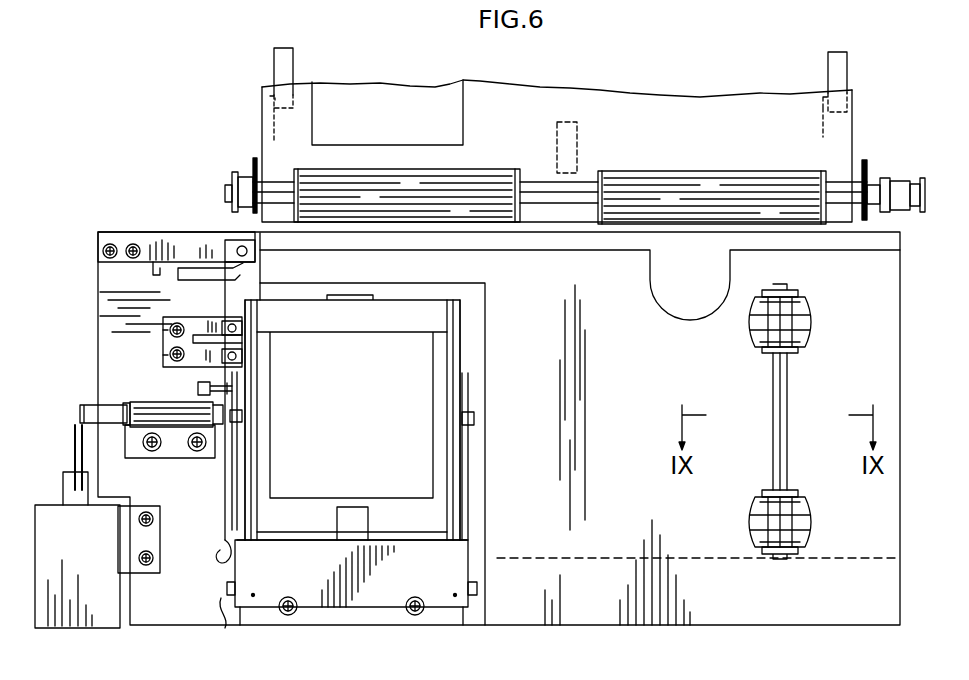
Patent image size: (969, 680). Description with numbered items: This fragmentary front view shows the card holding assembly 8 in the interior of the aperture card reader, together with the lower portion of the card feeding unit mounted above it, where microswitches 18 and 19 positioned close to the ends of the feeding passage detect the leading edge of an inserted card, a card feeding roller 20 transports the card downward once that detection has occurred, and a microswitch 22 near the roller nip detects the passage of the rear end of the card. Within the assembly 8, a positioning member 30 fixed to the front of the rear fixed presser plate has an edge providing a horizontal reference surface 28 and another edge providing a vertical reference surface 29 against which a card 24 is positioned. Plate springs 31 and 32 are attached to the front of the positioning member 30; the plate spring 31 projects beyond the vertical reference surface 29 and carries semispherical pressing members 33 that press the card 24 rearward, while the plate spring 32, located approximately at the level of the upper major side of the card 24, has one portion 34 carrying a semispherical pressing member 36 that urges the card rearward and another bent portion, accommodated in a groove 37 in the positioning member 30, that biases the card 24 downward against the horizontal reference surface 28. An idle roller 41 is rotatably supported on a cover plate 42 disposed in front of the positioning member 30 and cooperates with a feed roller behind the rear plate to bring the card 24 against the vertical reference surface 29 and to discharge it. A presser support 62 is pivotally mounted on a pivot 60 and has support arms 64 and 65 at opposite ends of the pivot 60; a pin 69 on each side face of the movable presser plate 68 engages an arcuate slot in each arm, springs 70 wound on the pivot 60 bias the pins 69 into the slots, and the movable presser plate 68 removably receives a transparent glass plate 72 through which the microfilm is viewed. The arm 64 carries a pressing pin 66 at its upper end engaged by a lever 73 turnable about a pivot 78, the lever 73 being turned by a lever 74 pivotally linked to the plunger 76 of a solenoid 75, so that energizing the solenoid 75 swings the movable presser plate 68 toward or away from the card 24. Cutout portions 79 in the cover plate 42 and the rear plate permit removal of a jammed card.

The card holding assembly 8 is at (90, 341).
The microswitch 18 is at (288, 62).
The microswitch 19 is at (830, 60).
The card feeding roller 20 is at (491, 188).
The microswitch 22 is at (578, 135).
The card 24 is at (688, 141).
The horizontal reference surface 28 is at (480, 552).
The vertical reference surface 29 is at (225, 534).
The positioning member 30 is at (178, 596).
The plate spring 31 is at (163, 357).
The plate spring 32 is at (120, 263).
The semispherical pressing member 33 is at (220, 322).
The portion 34 is at (232, 246).
The semispherical pressing member 36 is at (214, 248).
The groove 37 is at (172, 279).
The idle roller 41 is at (800, 520).
The cover plate 42 is at (600, 468).
The pivot 60 is at (225, 628).
The presser support 62 is at (368, 598).
The support arm 64 is at (230, 450).
The support arm 65 is at (468, 476).
The pressing pin 66 is at (198, 388).
The movable presser plate 68 is at (300, 324).
The pin 69 is at (232, 432).
The spring 70 is at (258, 453).
The transparent glass plate 72 is at (340, 437).
The lever 73 is at (178, 440).
The lever 74 is at (104, 408).
The solenoid 75 is at (68, 563).
The plunger 76 is at (70, 482).
The pivot 78 is at (134, 436).
The cutout portion 79 is at (715, 275).